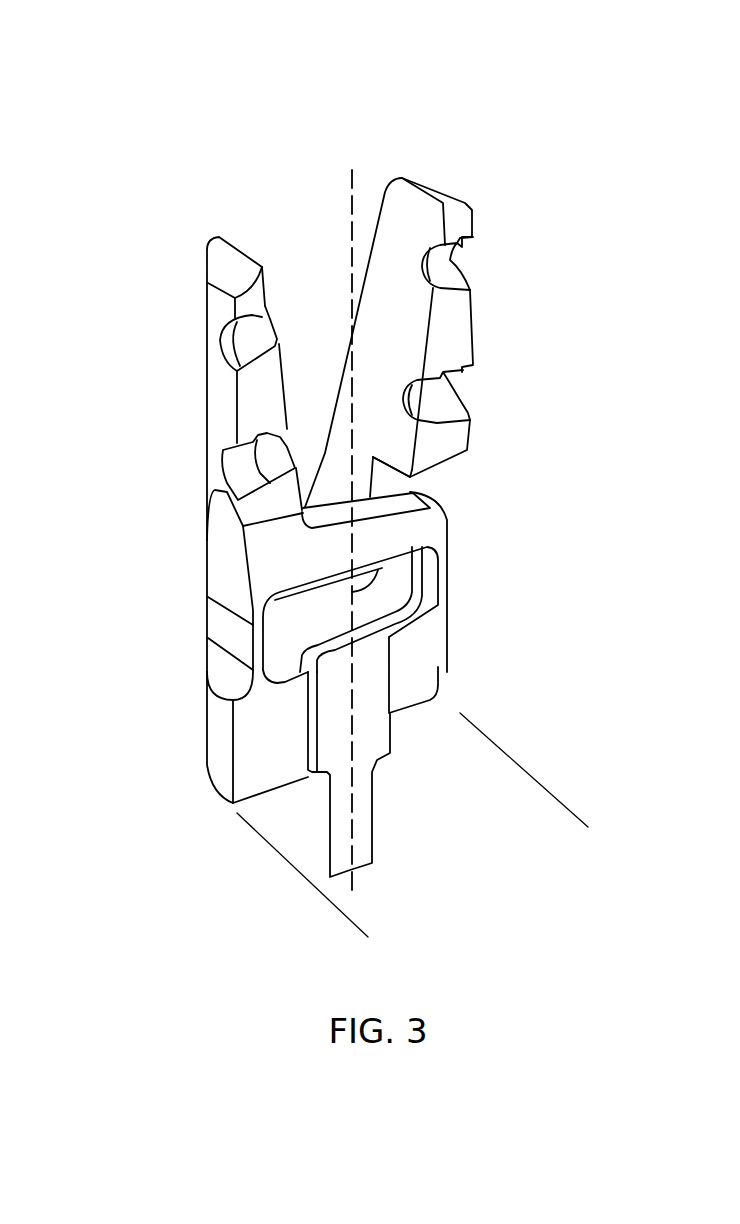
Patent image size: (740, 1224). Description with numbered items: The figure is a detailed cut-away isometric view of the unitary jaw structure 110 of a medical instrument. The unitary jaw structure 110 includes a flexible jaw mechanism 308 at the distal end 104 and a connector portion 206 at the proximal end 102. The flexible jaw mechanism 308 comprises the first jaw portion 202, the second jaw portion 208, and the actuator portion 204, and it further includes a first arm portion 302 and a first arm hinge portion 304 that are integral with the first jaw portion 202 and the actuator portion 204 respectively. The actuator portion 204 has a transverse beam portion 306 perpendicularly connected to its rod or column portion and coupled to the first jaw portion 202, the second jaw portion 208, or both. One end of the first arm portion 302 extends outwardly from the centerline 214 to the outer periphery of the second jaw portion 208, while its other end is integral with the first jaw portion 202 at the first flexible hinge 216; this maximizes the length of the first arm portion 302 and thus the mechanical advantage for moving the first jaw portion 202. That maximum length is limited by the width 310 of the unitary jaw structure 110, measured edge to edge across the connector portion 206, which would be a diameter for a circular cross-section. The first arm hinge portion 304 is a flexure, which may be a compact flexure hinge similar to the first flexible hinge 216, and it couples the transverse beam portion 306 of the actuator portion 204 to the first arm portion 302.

The unitary jaw structure 110 is at (207, 36).
The proximal end 102 is at (216, 866).
The distal end 104 is at (379, 156).
The first jaw portion 202 is at (200, 240).
The actuator portion 204 is at (450, 682).
The connector portion 206 is at (200, 670).
The second jaw portion 208 is at (497, 198).
The centerline 214 is at (352, 173).
The first flexible hinge 216 is at (180, 617).
The first arm portion 302 is at (303, 507).
The first arm hinge portion 304 is at (465, 547).
The transverse beam portion 306 is at (417, 673).
The flexible jaw mechanism 308 is at (171, 399).
The width 310 is at (355, 916).